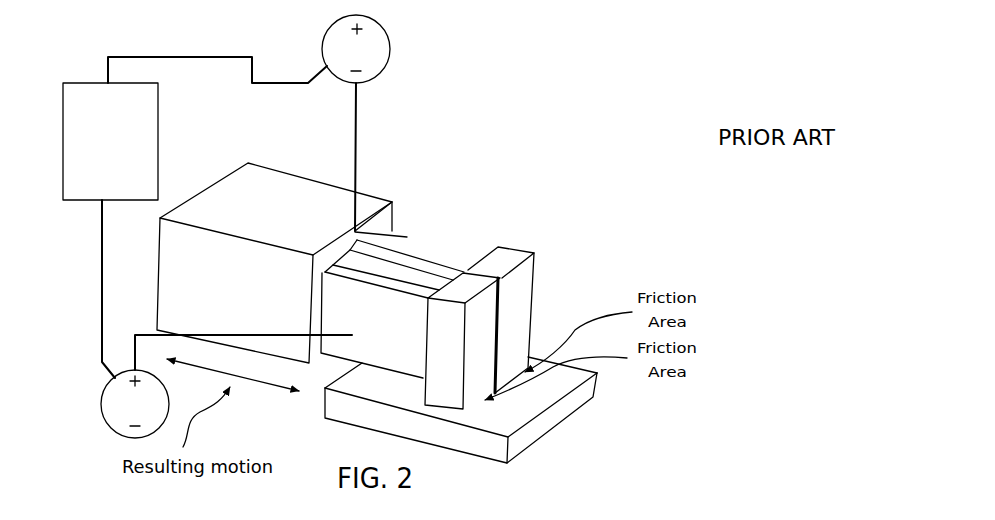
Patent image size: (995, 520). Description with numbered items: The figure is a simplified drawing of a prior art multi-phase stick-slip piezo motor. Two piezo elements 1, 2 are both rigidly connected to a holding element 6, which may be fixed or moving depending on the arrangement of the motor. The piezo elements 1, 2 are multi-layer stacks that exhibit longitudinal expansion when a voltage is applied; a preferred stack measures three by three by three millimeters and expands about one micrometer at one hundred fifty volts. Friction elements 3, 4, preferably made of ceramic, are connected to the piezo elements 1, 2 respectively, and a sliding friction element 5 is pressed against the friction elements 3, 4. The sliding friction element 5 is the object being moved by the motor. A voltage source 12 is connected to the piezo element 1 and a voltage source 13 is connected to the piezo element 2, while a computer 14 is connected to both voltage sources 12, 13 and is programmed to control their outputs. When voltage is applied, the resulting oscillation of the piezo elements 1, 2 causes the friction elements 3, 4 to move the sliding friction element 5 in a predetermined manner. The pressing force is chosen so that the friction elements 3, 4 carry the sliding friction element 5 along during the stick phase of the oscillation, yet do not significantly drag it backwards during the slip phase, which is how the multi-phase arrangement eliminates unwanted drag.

The piezo element 1 is at (412, 277).
The piezo element 2 is at (407, 237).
The friction element 3 is at (490, 337).
The friction element 4 is at (532, 277).
The sliding friction element 5 is at (530, 442).
The holding element 6 is at (287, 180).
The voltage source 12 is at (122, 437).
The voltage source 13 is at (388, 40).
The computer 14 is at (158, 153).